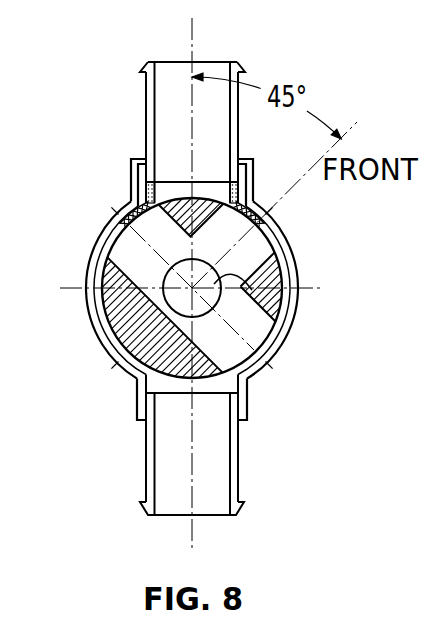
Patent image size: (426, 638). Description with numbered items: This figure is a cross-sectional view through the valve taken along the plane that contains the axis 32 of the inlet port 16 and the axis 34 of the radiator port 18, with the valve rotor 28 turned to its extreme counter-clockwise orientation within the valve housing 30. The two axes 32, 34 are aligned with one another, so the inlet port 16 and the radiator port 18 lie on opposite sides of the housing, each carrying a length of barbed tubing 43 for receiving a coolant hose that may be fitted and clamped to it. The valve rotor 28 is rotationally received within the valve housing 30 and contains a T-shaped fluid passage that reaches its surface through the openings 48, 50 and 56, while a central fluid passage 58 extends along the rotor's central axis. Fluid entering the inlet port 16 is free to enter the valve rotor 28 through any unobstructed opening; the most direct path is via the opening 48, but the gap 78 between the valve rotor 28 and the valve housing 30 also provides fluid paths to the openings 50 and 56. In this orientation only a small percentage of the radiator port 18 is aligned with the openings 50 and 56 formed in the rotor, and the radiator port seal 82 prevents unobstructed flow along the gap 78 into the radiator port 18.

The inlet port 16 is at (210, 516).
The radiator port 18 is at (209, 60).
The valve rotor 28 is at (130, 376).
The valve housing 30 is at (87, 302).
The axis of the inlet port 32 is at (192, 538).
The axis of the radiator port 34 is at (192, 44).
The barbed tubing 43 is at (146, 115).
The opening 48 is at (249, 367).
The opening 50 is at (283, 230).
The opening 56 is at (113, 212).
The central fluid passage 58 is at (292, 325).
The gap 78 is at (293, 277).
The radiator port seal 82 is at (258, 203).